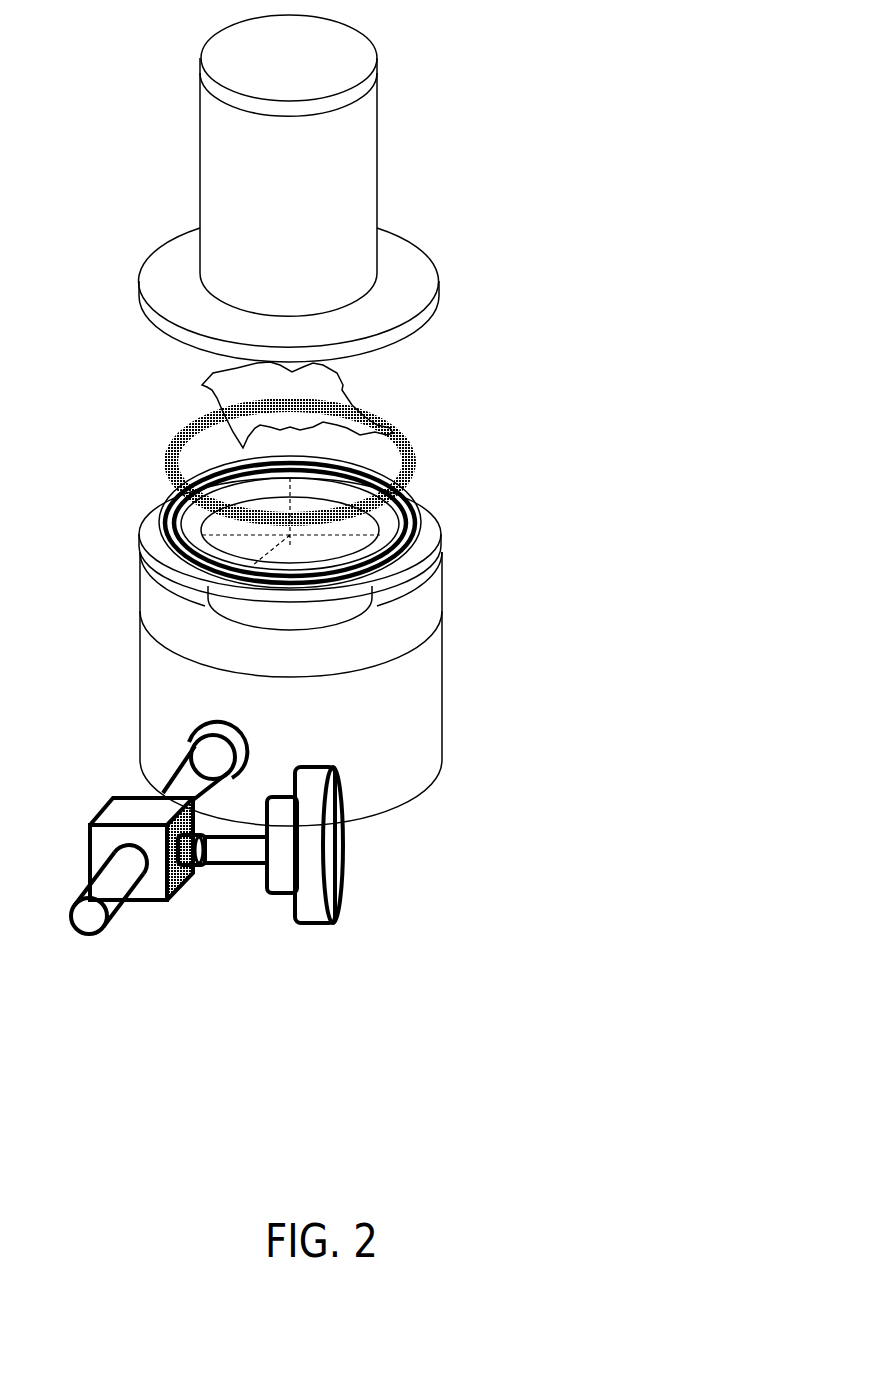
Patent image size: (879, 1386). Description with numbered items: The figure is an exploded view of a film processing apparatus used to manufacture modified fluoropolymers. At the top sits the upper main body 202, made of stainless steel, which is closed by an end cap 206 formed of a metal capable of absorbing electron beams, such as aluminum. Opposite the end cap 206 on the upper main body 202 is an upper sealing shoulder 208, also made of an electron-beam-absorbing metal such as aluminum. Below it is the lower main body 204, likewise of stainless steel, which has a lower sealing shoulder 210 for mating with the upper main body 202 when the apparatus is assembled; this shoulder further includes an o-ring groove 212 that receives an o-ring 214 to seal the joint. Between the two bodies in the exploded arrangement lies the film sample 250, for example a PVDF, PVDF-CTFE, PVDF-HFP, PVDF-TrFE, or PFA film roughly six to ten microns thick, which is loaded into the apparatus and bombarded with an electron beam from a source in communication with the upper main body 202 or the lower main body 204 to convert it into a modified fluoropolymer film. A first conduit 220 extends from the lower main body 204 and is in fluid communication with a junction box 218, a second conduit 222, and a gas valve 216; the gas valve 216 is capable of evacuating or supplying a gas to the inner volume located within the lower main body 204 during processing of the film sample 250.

The upper main body 202 is at (315, 213).
The lower main body 204 is at (410, 690).
The end cap 206 is at (288, 59).
The upper sealing shoulder 208 is at (405, 283).
The lower sealing shoulder 210 is at (413, 494).
The o-ring groove 212 is at (418, 535).
The o-ring 214 is at (170, 469).
The gas valve 216 is at (335, 863).
The junction box 218 is at (127, 812).
The first conduit 220 is at (193, 770).
The second conduit 222 is at (110, 892).
The film sample 250 is at (215, 393).